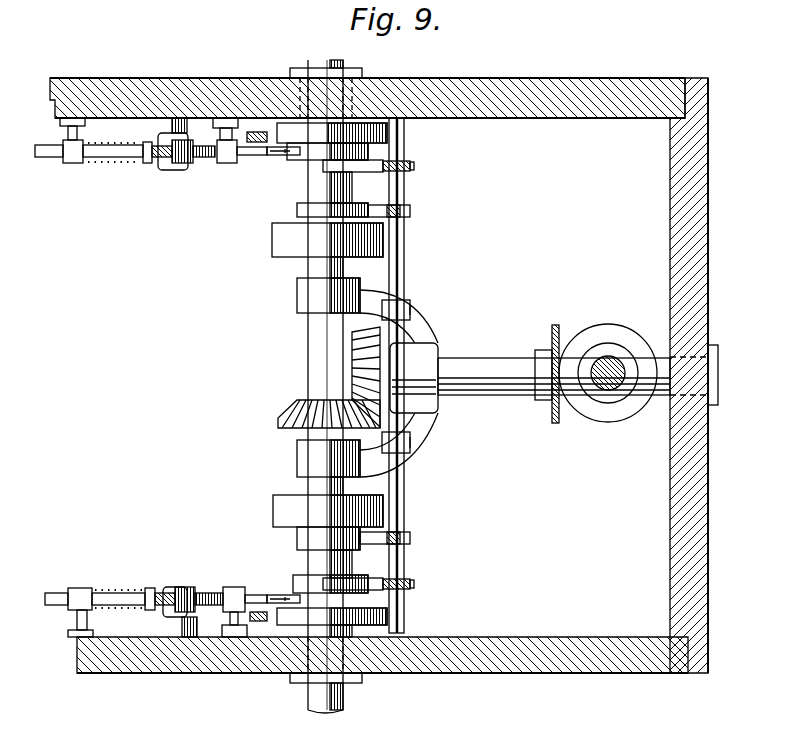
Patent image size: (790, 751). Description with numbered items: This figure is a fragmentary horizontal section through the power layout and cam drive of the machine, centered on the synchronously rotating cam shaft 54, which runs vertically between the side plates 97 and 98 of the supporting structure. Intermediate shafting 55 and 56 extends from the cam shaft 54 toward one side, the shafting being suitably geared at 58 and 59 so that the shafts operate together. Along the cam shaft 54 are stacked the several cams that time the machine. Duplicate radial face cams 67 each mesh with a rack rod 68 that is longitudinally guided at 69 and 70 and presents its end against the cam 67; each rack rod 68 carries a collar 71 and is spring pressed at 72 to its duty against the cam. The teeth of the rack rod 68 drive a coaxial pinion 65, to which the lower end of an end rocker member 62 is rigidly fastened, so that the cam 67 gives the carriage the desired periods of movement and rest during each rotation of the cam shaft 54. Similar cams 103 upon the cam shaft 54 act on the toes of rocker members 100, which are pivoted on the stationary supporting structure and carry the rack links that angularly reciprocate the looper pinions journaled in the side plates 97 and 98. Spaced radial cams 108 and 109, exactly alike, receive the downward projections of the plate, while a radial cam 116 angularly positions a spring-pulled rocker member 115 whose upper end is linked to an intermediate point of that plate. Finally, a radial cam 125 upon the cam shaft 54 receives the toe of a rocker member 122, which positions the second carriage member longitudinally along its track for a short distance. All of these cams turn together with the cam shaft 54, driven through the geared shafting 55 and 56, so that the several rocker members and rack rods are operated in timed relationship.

The shaft 54 is at (318, 331).
The intermediate shafting 55 is at (605, 390).
The intermediate shafting 56 is at (487, 362).
The gearing 58 is at (566, 422).
The gearing 59 is at (358, 370).
The end rocker member 62 is at (168, 170).
The coaxial pinion 65 is at (190, 164).
The radial face cam 67 is at (290, 160).
The rack rod 68 is at (205, 158).
The guide 69 is at (225, 163).
The guide 70 is at (70, 163).
The collar 71 is at (146, 163).
The spring 72 is at (115, 163).
The side plate 97 is at (90, 672).
The side plate 98 is at (82, 96).
The rocker member 100 is at (255, 130).
The cam 103 is at (287, 135).
The radial cam 108 is at (280, 509).
The radial cam 109 is at (283, 246).
The rocker member 115 is at (413, 209).
The radial cam 116 is at (298, 212).
The rocker member 122 is at (415, 164).
The radial cam 125 is at (300, 160).